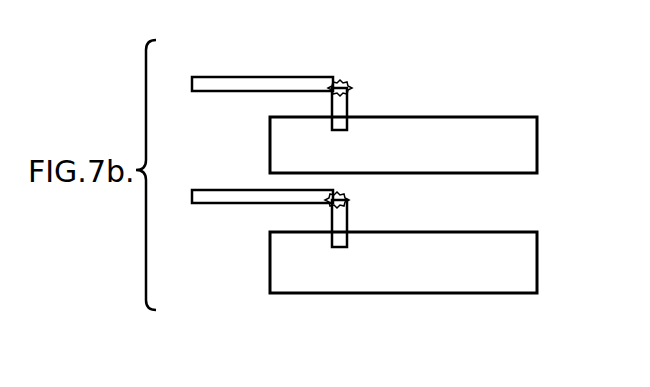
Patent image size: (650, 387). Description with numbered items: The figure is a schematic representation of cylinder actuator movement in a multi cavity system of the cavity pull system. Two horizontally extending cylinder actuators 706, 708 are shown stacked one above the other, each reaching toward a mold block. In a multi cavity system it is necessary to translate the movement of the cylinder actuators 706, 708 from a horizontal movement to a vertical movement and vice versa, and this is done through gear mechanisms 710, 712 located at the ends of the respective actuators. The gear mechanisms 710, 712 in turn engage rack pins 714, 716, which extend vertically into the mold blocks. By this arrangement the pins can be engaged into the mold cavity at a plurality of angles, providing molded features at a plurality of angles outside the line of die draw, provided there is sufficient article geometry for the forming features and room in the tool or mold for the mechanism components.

The cylinder actuator 706 is at (220, 80).
The cylinder actuator 708 is at (212, 194).
The gear mechanism 710 is at (347, 87).
The gear mechanism 712 is at (345, 196).
The rack pin 714 is at (342, 107).
The rack pin 716 is at (342, 220).